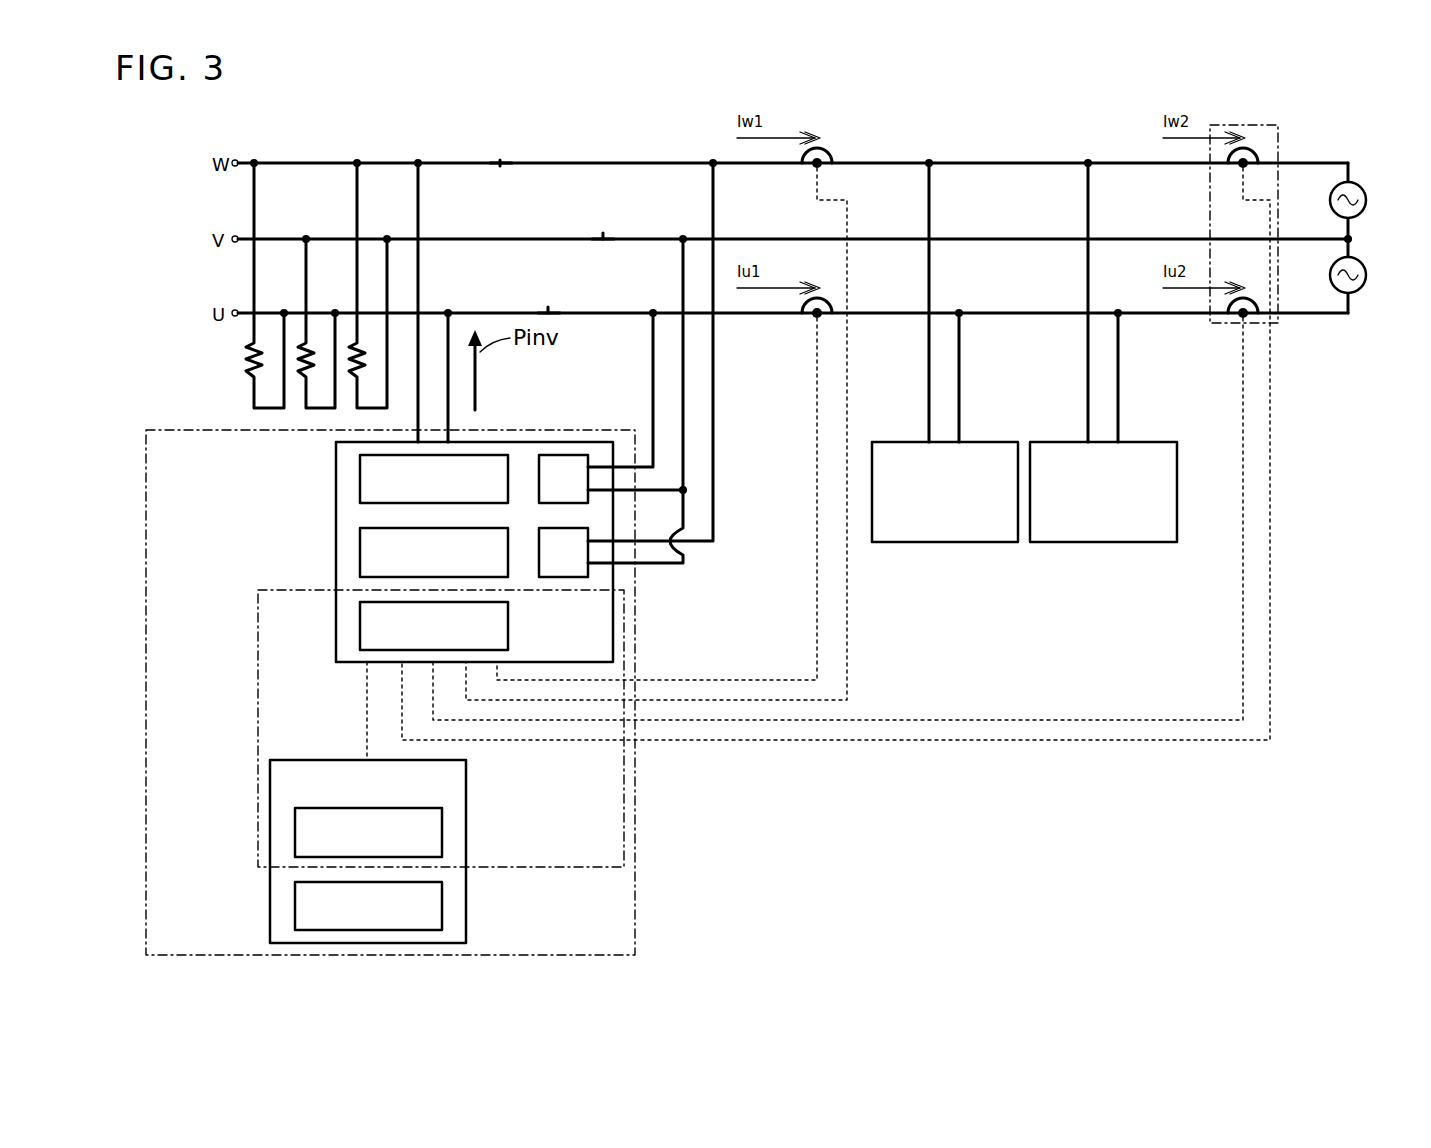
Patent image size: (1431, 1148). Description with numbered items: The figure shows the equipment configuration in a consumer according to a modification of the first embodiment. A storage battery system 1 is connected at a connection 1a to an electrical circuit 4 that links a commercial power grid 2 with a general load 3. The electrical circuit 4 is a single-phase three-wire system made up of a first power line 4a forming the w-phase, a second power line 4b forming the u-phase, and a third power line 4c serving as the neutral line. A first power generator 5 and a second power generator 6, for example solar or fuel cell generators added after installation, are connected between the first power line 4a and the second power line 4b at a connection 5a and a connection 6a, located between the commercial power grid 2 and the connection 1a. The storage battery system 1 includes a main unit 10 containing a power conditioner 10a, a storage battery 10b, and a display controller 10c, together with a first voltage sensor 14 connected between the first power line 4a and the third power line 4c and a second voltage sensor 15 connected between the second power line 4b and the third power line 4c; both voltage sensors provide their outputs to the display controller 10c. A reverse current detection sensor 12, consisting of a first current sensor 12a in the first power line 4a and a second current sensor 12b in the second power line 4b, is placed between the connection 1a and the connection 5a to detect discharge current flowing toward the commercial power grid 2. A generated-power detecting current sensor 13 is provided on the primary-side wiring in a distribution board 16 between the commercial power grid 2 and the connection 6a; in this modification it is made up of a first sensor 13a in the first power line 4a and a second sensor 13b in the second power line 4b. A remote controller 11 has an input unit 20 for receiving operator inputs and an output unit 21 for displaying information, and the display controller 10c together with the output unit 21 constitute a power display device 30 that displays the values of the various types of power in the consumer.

The storage battery system 1 is at (159, 422).
The connection 1a is at (422, 157).
The commercial power grid 2 is at (1373, 175).
The general load 3 is at (355, 383).
The electrical circuit 4 is at (473, 102).
The first power line 4a is at (500, 160).
The second power line 4b is at (548, 311).
The third power line 4c is at (603, 237).
The first power generator 5 is at (913, 545).
The connection 5a is at (953, 160).
The second power generator 6 is at (1071, 545).
The connection 6a is at (1100, 156).
The main unit 10 is at (494, 441).
The power conditioner 10a is at (358, 491).
The storage battery 10b is at (358, 548).
The display controller 10c is at (358, 618).
The remote controller 11 is at (312, 760).
The reverse current detection sensor 12 is at (707, 377).
The first current sensor 12a is at (832, 152).
The second current sensor 12b is at (832, 300).
The generated-power detecting current sensor 13 is at (895, 397).
The first sensor 13a is at (1258, 152).
The second sensor 13b is at (1257, 302).
The first voltage sensor 14 is at (562, 578).
The second voltage sensor 15 is at (560, 454).
The distribution board 16 is at (1228, 326).
The input unit 20 is at (445, 896).
The output unit 21 is at (445, 822).
The power display device 30 is at (258, 650).